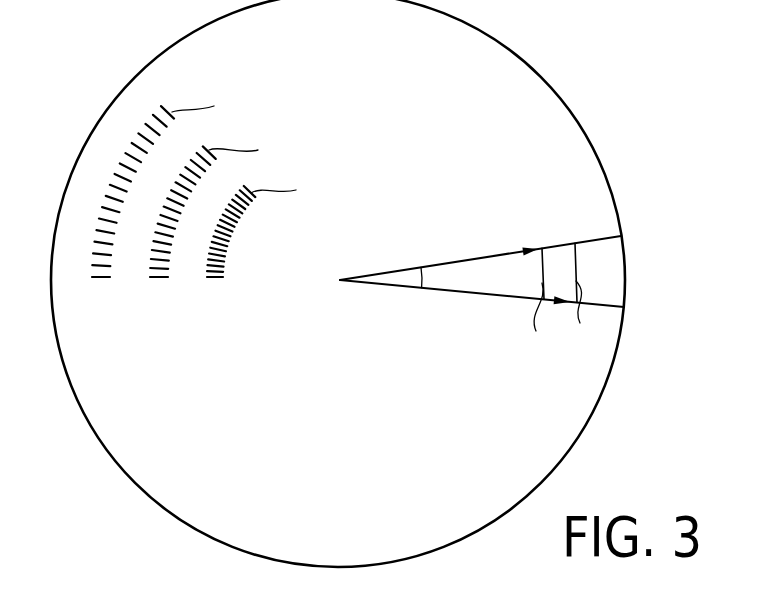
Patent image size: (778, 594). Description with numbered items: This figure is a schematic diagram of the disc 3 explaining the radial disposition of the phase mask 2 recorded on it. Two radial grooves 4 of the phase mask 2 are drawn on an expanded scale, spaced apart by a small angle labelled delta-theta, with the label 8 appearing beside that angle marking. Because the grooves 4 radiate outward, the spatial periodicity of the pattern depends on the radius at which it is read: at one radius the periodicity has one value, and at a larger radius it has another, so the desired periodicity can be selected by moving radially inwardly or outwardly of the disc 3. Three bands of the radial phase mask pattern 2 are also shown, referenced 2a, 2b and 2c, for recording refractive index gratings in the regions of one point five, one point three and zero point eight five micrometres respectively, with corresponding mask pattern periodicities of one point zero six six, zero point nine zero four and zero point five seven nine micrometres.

The phase mask 2 is at (482, 266).
The band of the radial phase mask pattern 2a is at (102, 276).
The band of the radial phase mask pattern 2b is at (160, 278).
The band of the radial phase mask pattern 2c is at (215, 278).
The disc 3 is at (612, 190).
The radial grooves 4 is at (505, 256).
The angle θ 8 is at (395, 282).